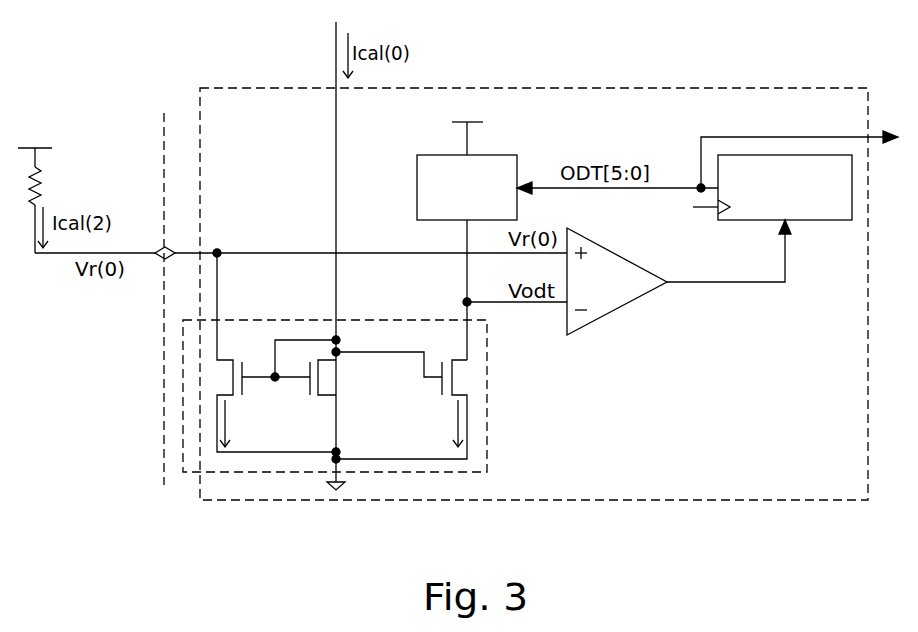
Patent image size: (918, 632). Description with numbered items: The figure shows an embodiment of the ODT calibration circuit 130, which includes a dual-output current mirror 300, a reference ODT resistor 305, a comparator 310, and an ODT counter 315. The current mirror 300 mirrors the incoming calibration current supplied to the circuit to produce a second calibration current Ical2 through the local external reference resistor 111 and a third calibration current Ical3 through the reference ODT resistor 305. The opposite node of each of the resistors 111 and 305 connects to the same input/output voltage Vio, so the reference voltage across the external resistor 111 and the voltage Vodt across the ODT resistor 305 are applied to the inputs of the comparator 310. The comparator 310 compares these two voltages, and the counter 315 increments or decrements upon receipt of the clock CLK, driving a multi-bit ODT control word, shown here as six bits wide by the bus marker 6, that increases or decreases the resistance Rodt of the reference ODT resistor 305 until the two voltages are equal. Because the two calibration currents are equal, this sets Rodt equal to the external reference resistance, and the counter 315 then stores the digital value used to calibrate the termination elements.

The local external reference resistor 111 is at (46, 175).
The dual-output current mirror 300 is at (358, 320).
The reference ODT resistor 305 is at (487, 210).
The comparator 310 is at (635, 293).
The ODT counter 315 is at (805, 210).
The ODT calibration circuit 130 is at (863, 493).
The ODT bus width 6 is at (747, 148).